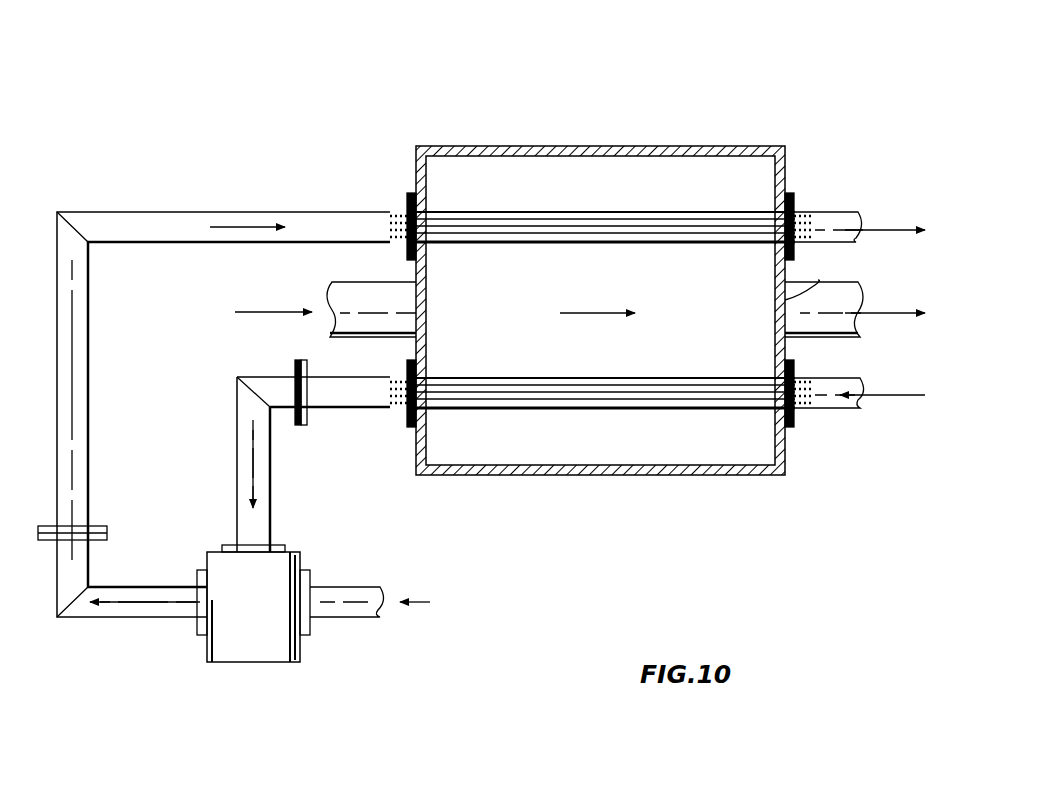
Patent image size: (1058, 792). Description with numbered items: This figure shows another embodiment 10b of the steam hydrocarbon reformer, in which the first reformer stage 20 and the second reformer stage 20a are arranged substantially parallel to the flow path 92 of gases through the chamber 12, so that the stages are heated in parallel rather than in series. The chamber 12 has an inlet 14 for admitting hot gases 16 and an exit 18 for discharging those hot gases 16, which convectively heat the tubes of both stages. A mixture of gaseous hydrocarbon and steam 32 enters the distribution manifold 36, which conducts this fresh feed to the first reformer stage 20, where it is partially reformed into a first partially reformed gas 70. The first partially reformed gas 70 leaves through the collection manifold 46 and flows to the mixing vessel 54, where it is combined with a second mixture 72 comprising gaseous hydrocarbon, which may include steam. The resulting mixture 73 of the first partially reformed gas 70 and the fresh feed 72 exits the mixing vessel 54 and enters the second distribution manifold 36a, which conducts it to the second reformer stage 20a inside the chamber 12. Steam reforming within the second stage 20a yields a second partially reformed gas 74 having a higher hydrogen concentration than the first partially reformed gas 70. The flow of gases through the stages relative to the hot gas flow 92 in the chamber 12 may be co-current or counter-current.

The reformer embodiment 10b is at (665, 108).
The chamber 12 is at (712, 477).
The inlet 14 is at (400, 302).
The hot gases 16 is at (262, 312).
The exit 18 is at (810, 276).
The first reformer stage 20 is at (678, 396).
The second reformer stage 20a is at (686, 236).
The gaseous hydrocarbon and steam mixture 32 is at (890, 400).
The distribution manifold 36 is at (826, 405).
The second distribution manifold 36a is at (270, 220).
The collection manifold 46 is at (343, 405).
The mixing vessel 54 is at (288, 665).
The first partially reformed gas 70 is at (262, 472).
The second mixture 72 is at (482, 606).
The mixture 73 is at (158, 596).
The second partially reformed gas 74 is at (876, 230).
The flow path 92 is at (590, 310).